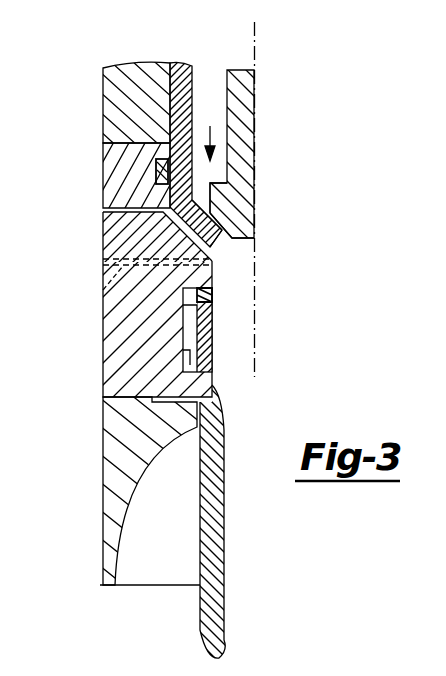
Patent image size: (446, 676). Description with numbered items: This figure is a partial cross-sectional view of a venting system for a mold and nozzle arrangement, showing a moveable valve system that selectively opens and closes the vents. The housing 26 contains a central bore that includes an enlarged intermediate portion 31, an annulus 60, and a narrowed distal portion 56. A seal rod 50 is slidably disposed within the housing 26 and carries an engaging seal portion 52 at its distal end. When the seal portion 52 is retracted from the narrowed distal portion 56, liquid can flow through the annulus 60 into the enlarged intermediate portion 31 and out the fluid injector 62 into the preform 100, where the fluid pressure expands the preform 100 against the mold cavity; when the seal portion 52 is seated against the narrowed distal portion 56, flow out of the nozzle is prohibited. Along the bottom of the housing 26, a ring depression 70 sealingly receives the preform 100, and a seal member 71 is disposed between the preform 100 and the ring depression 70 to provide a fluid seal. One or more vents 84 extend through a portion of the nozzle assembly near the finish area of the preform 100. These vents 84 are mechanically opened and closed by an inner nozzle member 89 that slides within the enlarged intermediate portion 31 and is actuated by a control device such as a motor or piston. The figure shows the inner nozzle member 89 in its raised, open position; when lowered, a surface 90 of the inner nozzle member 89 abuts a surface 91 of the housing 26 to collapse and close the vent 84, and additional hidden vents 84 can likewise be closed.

The housing 26 is at (103, 98).
The enlarged intermediate portion 31 is at (190, 124).
The annulus 60 is at (217, 88).
The seal rod 50 is at (260, 98).
The seal portion 52 is at (257, 193).
The inner nozzle member 89 is at (158, 184).
The vent 84 is at (103, 213).
The narrowed distal portion 56 is at (208, 206).
The surface of inner nozzle member 90 is at (178, 220).
The surface of housing 91 is at (214, 238).
The fluid injector 62 is at (215, 265).
The seal member 71 is at (183, 303).
The ring depression 70 is at (190, 348).
The preform 100 is at (200, 627).